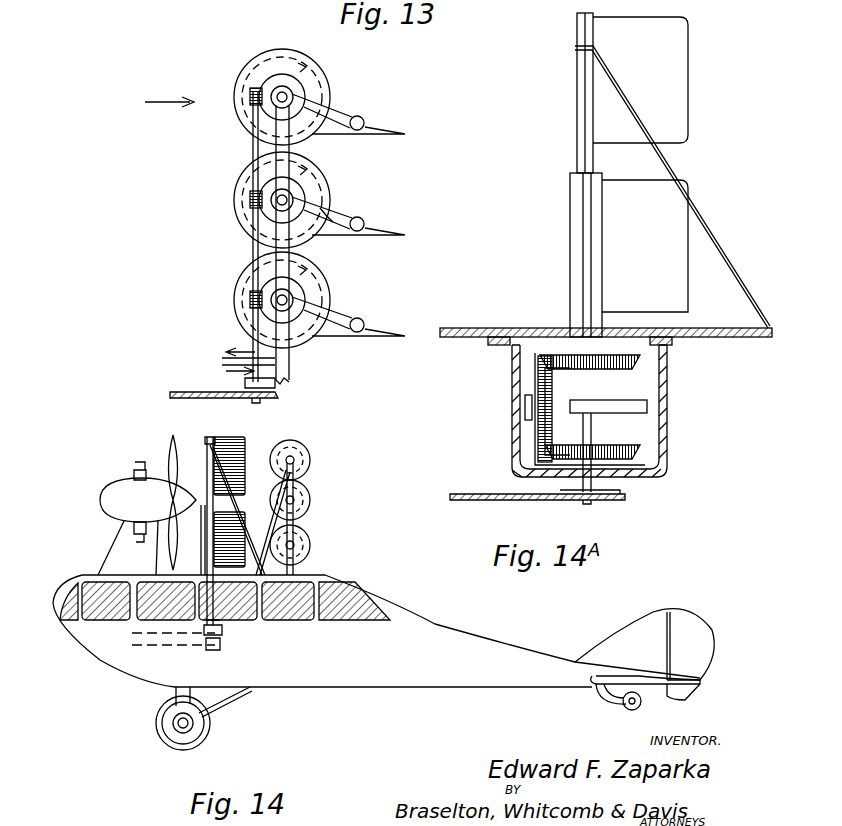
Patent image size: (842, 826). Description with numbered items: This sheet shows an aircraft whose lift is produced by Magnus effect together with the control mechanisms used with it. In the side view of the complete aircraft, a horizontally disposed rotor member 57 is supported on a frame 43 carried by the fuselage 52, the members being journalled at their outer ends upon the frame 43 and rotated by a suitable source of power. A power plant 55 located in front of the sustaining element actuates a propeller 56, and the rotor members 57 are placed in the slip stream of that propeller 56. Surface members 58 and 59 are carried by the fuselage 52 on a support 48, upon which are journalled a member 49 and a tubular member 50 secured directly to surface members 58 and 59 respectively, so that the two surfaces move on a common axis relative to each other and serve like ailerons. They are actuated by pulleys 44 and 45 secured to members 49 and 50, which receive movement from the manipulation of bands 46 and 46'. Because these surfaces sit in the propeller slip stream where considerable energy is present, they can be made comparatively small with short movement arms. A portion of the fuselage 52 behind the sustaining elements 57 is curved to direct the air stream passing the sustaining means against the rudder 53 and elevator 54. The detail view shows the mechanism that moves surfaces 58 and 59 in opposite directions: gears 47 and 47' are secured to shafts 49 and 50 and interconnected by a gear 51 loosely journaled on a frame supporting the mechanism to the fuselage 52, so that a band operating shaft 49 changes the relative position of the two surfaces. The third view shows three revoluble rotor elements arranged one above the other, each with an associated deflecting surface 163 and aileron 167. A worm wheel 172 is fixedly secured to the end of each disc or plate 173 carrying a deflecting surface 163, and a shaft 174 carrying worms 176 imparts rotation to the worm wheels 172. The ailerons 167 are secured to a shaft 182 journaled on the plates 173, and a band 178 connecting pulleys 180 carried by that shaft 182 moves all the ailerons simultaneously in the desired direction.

In FIG. 13, the deflecting surface 163 is at (318, 96).
In FIG. 13, the aileron 167 is at (368, 126).
In FIG. 13, the disc or plate 173 is at (312, 184).
In FIG. 13, the worm 176 is at (250, 199).
In FIG. 13, the band 178 is at (330, 218).
In FIG. 13, the shaft 182 is at (368, 223).
In FIG. 13, the shaft 174 is at (258, 258).
In FIG. 13, the worm wheel 172 is at (262, 318).
In FIG. 13, the pulley 180 is at (355, 321).
In FIG. 14A, the surface member 58 is at (690, 70).
In FIG. 14, the surface member 58 is at (246, 444).
In FIG. 14A, the surface member 59 is at (670, 217).
In FIG. 14, the surface member 59 is at (240, 548).
In FIG. 14A, the gear 47' is at (629, 356).
In FIG. 14A, the tubular member 50 is at (606, 380).
In FIG. 14, the tubular member 50 is at (208, 520).
In FIG. 14A, the gear 51 is at (535, 384).
In FIG. 14A, the member 49 is at (600, 428).
In FIG. 14, the member 49 is at (203, 446).
In FIG. 14A, the gear 47 is at (629, 448).
In FIG. 14, the propeller 56 is at (182, 461).
In FIG. 14, the power plant 55 is at (118, 492).
In FIG. 14, the rotor member 57 is at (312, 455).
In FIG. 14, the frame 43 is at (296, 484).
In FIG. 14, the support 48 is at (207, 565).
In FIG. 14, the pulley 44 is at (223, 634).
In FIG. 14, the pulley 45 is at (222, 648).
In FIG. 14, the band 46 is at (173, 654).
In FIG. 14, the band 46' is at (173, 658).
In FIG. 14, the fuselage 52 is at (331, 675).
In FIG. 14, the rudder 53 is at (688, 614).
In FIG. 14, the elevator 54 is at (700, 684).